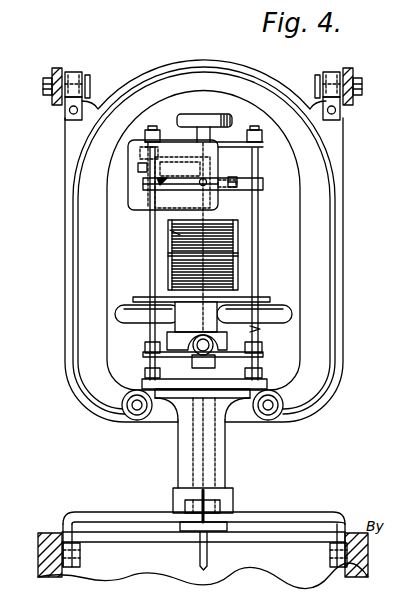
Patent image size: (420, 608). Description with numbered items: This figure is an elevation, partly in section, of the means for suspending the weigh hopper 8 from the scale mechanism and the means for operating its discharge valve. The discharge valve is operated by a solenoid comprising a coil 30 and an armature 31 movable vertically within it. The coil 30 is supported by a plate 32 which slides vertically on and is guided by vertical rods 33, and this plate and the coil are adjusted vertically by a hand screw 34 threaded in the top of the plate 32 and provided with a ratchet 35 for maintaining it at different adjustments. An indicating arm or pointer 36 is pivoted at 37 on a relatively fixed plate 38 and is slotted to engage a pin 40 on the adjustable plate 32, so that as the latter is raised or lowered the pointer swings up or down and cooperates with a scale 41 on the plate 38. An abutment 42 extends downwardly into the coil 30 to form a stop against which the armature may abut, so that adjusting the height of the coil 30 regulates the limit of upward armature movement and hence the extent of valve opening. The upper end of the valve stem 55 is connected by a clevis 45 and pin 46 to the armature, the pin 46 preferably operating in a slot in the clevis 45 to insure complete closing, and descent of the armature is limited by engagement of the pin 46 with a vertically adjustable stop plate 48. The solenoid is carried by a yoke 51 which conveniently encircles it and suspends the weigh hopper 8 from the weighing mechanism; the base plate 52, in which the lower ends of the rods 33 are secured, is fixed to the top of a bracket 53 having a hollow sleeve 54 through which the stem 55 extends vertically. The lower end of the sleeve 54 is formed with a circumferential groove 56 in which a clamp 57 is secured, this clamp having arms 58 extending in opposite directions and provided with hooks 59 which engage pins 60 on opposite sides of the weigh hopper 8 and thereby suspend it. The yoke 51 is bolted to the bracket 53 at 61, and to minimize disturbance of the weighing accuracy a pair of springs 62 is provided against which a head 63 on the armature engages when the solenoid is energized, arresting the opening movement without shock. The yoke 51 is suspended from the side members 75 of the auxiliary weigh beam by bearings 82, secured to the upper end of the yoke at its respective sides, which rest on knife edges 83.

The weigh hopper 8 is at (372, 573).
The coil 30 is at (243, 238).
The armature 31 is at (214, 320).
The plate 32 is at (263, 186).
The vertical rods 33 is at (258, 266).
The hand screw 34 is at (198, 119).
The ratchet 35 is at (173, 140).
The indicating arm or pointer 36 is at (178, 180).
The pivot 37 is at (207, 181).
The plate 38 is at (140, 207).
The pin 40 is at (240, 179).
The scale 41 is at (140, 168).
The abutment 42 is at (177, 233).
The clevis 45 is at (212, 360).
The pin 46 is at (168, 341).
The stop plate 48 is at (145, 356).
The yoke 51 is at (325, 283).
The base plate 52 is at (267, 382).
The bracket 53 is at (232, 418).
The hollow sleeve 54 is at (178, 448).
The stem 55 is at (213, 551).
The circumferential groove 56 is at (233, 490).
The clamp 57 is at (173, 497).
The arms 58 is at (118, 514).
The hooks 59 is at (80, 562).
The pins 60 is at (65, 540).
The bolt 61 is at (126, 419).
The springs 62 is at (125, 322).
The head 63 is at (258, 333).
The side members 75 is at (56, 68).
The bearings 82 is at (78, 72).
The knife edges 83 is at (90, 78).